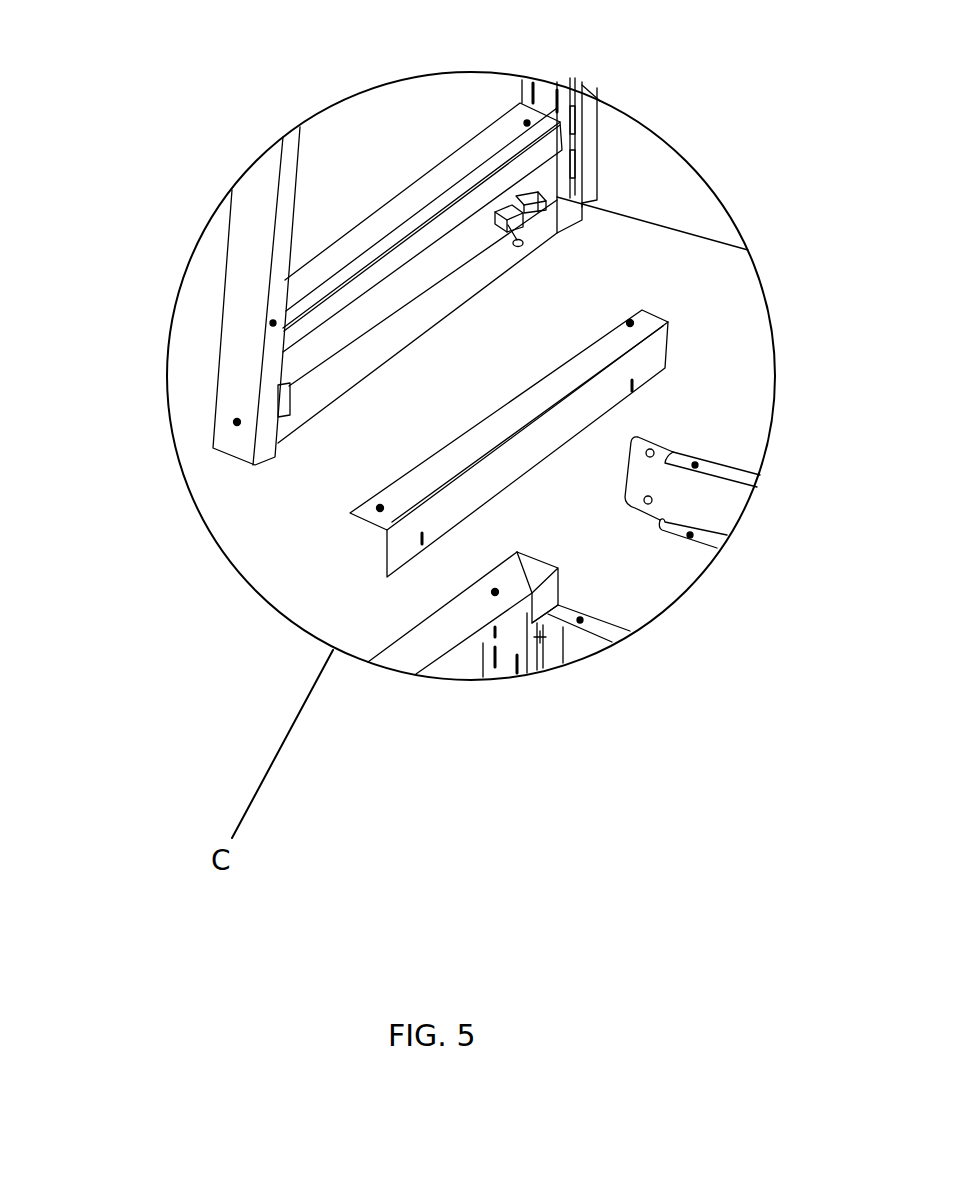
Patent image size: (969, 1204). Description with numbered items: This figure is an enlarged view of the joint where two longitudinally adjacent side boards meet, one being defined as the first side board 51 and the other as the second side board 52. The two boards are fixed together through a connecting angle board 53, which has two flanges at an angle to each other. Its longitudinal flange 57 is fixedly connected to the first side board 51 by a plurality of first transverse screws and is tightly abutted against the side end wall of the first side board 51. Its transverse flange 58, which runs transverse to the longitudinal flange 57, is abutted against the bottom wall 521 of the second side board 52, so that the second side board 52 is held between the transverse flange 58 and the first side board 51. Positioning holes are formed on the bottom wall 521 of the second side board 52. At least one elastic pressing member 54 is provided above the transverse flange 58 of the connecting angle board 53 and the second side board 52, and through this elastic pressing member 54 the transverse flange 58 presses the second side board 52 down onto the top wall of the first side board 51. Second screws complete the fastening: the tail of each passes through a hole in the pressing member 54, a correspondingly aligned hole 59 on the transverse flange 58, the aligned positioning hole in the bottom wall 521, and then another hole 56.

The first side board 51 is at (432, 640).
The second side board 52 is at (323, 388).
The bottom wall 521 is at (503, 208).
The connecting angle board 53 is at (604, 411).
The elastic pressing member 54 is at (514, 205).
The hole 56 is at (497, 591).
The longitudinal flange 57 is at (527, 453).
The transverse flange 58 is at (537, 380).
The hole 59 is at (628, 323).